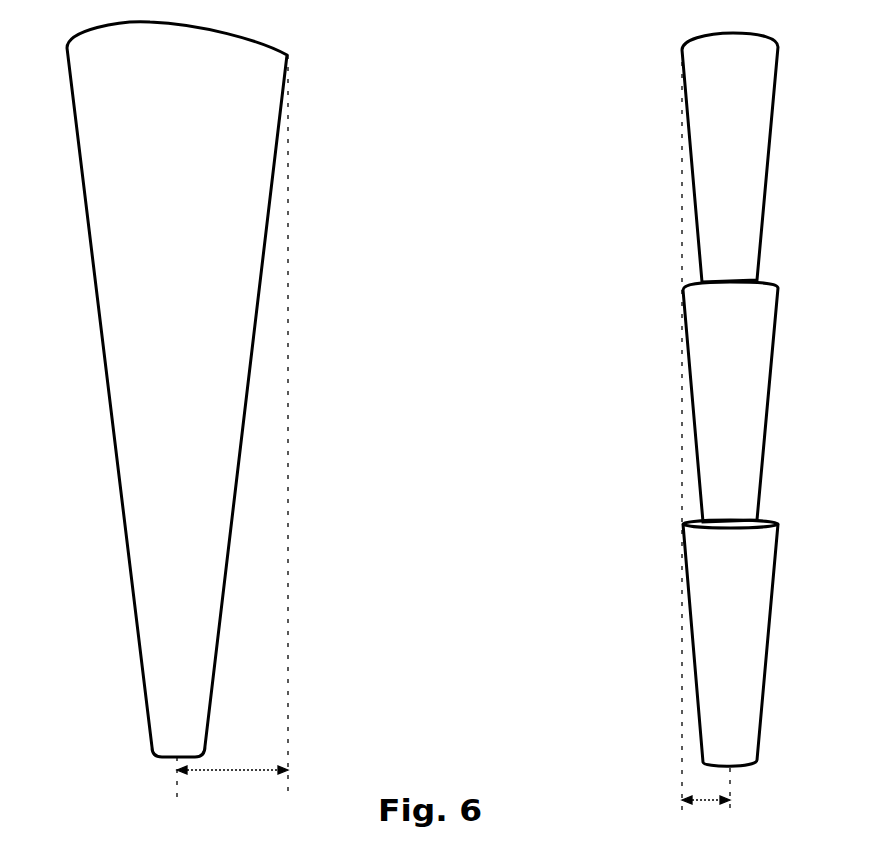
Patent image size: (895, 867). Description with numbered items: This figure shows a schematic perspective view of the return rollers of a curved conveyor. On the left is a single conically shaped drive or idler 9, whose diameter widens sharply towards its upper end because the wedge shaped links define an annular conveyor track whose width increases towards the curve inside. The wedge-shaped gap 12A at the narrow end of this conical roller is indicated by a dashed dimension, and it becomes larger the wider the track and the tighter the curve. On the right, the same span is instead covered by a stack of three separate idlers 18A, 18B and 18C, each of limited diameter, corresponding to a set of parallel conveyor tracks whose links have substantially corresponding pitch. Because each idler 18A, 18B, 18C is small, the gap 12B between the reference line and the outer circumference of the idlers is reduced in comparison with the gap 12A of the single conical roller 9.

The conical dispensing tip / nozzle body 9 is at (133, 570).
The outlet diameter of the one-piece tip 12A is at (232, 427).
The idler 18A is at (750, 635).
The idler 18B is at (748, 390).
The idler 18C is at (750, 168).
The gap 12B is at (705, 446).